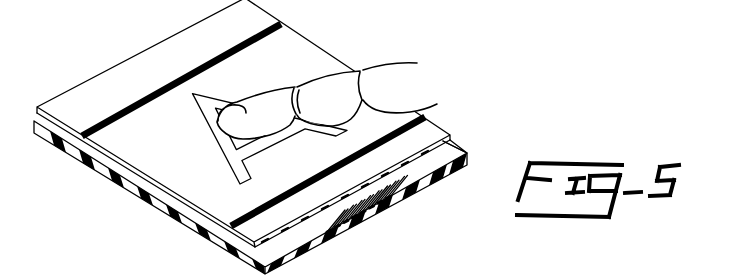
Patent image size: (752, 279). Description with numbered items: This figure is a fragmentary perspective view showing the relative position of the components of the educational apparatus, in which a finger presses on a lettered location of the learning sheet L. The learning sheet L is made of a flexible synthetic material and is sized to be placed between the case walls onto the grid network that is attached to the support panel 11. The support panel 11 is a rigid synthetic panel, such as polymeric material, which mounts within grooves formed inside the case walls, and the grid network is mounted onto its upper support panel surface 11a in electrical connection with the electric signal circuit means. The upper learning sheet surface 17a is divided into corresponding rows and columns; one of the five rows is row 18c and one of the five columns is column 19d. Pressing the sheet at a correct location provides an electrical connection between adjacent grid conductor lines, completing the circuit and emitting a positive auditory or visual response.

The support panel 11 is at (310, 247).
The upper support panel surface 11a is at (448, 150).
The upper learning sheet surface 17a is at (57, 111).
The row 18c is at (177, 180).
The column 19d is at (200, 78).
The learning sheet L is at (140, 125).